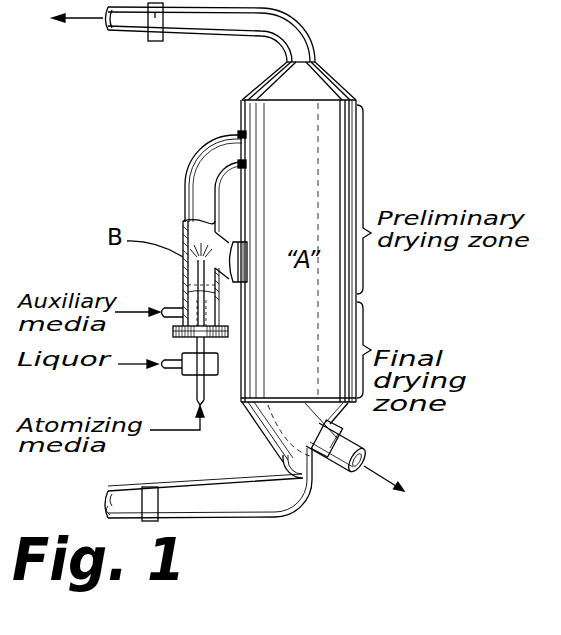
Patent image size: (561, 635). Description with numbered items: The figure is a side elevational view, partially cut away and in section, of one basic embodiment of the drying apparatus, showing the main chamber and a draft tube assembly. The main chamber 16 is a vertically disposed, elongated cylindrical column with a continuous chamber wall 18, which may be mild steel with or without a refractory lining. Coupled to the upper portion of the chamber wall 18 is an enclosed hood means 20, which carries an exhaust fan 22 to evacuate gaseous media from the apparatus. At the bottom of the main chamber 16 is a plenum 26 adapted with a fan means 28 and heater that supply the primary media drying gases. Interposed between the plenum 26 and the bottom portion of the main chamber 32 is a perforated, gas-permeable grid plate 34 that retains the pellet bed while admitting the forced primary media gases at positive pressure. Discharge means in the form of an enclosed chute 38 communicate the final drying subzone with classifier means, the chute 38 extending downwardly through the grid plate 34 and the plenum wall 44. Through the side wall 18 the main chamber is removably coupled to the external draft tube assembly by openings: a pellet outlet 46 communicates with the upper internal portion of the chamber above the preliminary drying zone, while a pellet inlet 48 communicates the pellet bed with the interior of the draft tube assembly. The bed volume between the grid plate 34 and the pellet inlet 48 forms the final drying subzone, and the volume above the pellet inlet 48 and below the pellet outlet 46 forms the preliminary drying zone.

The main chamber 16 is at (348, 202).
The chamber wall 18 is at (357, 140).
The hood means 20 is at (325, 82).
The exhaust fan 22 is at (151, 41).
The plenum 26 is at (279, 444).
The fan means 28 is at (151, 488).
The bottom portion of the main chamber 32 is at (228, 388).
The grid plate 34 is at (286, 400).
The chute 38 is at (332, 452).
The plenum wall 44 is at (342, 426).
The pellet outlet 46 is at (256, 152).
The pellet inlet 48 is at (259, 258).